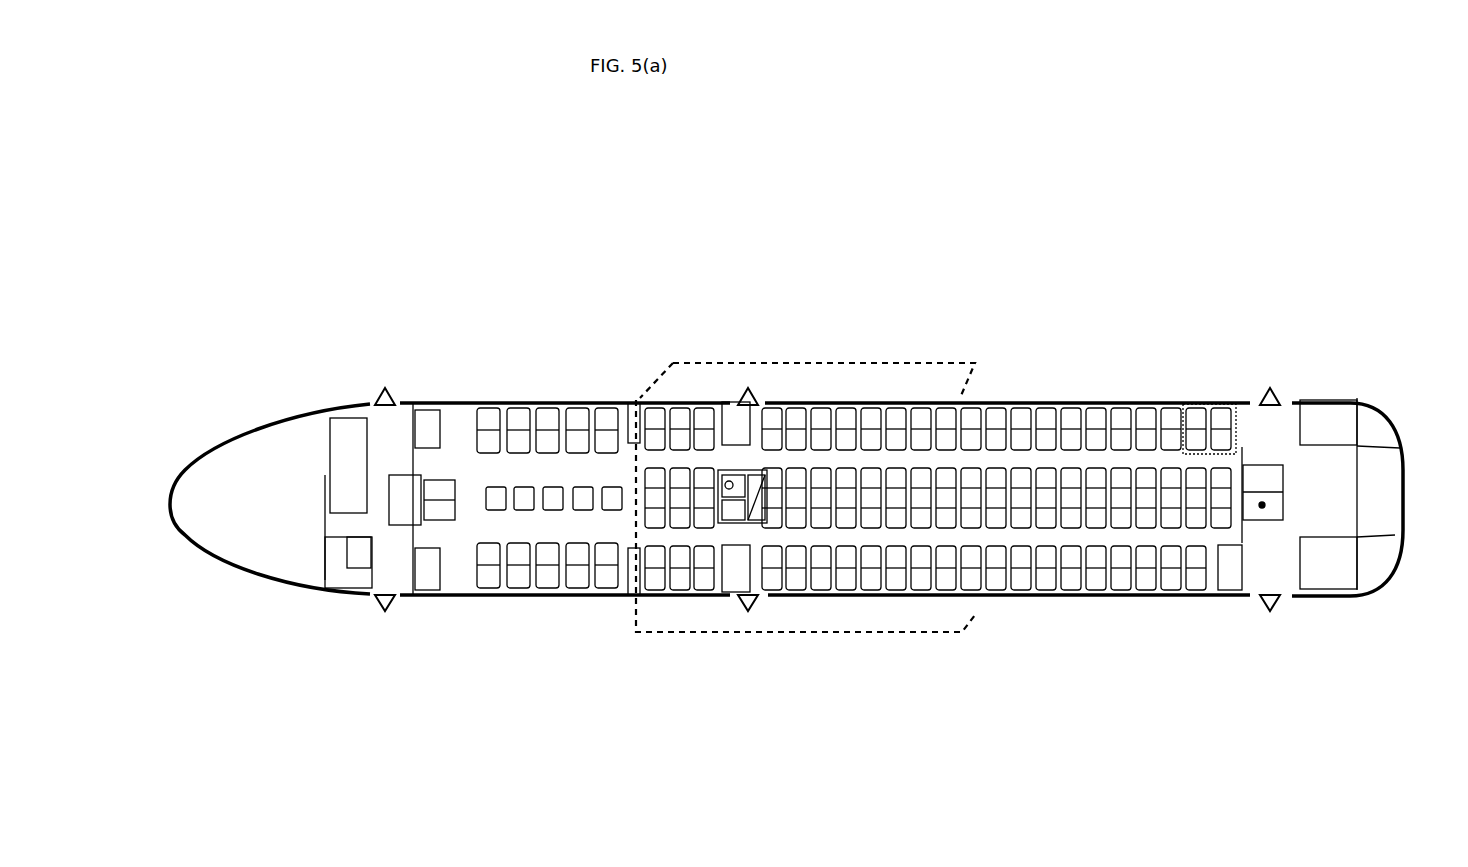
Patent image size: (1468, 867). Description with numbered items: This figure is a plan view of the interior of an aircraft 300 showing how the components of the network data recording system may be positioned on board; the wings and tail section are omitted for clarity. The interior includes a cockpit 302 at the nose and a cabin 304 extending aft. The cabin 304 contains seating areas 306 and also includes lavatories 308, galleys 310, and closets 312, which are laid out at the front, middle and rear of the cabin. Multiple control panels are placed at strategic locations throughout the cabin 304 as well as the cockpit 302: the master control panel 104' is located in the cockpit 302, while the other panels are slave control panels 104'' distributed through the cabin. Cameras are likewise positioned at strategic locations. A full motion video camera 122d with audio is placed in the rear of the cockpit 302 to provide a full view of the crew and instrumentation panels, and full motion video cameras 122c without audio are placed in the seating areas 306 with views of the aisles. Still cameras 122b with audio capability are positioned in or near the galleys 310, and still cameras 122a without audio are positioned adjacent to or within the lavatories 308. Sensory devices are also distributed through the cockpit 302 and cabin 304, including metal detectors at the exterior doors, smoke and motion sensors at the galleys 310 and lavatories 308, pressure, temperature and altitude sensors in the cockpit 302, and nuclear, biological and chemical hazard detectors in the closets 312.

The aircraft 300 is at (345, 203).
The cockpit 302 is at (215, 565).
The cabin 304 is at (603, 243).
The seating areas 306 is at (1075, 570).
The lavatories 308 is at (1237, 643).
The galleys 310 is at (345, 460).
The closets 312 is at (630, 440).
The master control panel 104' is at (231, 611).
The slave control panels 104'' is at (852, 510).
The still cameras without audio 122a is at (1337, 423).
The still cameras with audio 122b is at (410, 500).
The full motion video cameras without audio 122c is at (590, 460).
The full motion video camera with audio 122d is at (277, 447).